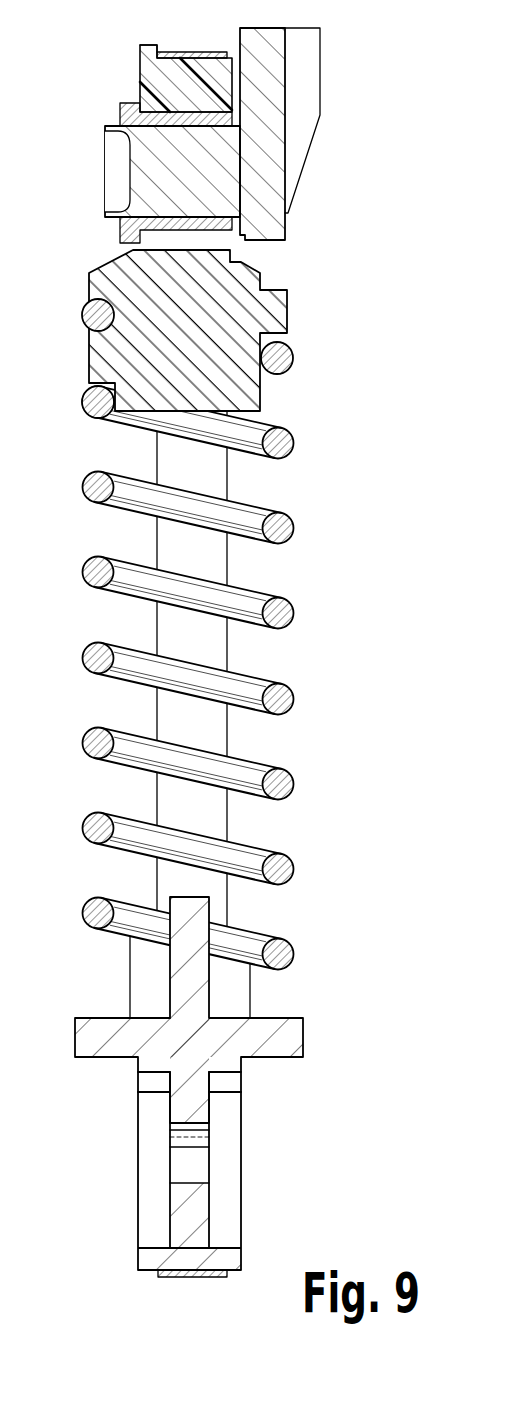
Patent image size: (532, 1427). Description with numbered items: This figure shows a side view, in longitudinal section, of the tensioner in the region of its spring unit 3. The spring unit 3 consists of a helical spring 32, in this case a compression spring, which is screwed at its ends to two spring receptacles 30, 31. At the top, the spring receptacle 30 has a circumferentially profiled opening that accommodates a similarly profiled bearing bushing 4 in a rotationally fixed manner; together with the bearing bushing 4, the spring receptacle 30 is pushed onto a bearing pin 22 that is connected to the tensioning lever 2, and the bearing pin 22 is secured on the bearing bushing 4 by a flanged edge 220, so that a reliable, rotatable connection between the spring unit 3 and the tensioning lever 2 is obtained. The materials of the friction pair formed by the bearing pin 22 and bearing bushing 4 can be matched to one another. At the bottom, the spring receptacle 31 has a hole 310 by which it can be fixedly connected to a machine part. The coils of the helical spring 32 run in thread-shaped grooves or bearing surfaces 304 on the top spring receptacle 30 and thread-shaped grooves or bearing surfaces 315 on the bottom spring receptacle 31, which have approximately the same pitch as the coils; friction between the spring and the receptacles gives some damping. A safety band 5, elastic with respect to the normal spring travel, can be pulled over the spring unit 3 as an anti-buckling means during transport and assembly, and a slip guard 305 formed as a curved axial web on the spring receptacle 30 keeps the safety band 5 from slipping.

The tensioning lever 2 is at (329, 71).
The spring unit 3 is at (194, 747).
The bearing bushing 4 is at (138, 220).
The safety band 5 is at (208, 563).
The bearing pin 22 is at (137, 188).
The spring receptacle 30 is at (147, 72).
The spring receptacle 31 is at (195, 1208).
The helical spring 32 is at (247, 768).
The flanged edge 220 is at (110, 127).
The thread-shaped grooves or bearing surfaces 304 is at (262, 322).
The slip guard 305 is at (153, 47).
The hole 310 is at (195, 1126).
The thread-shaped grooves or bearing surfaces 315 is at (147, 945).